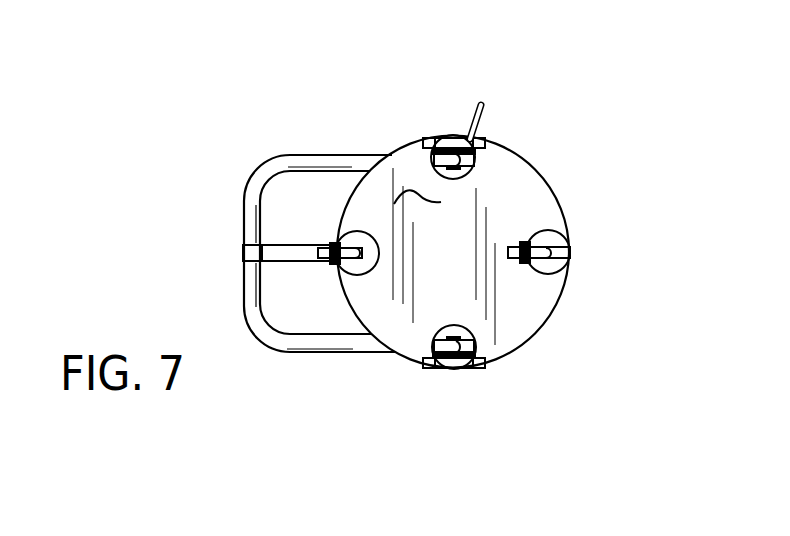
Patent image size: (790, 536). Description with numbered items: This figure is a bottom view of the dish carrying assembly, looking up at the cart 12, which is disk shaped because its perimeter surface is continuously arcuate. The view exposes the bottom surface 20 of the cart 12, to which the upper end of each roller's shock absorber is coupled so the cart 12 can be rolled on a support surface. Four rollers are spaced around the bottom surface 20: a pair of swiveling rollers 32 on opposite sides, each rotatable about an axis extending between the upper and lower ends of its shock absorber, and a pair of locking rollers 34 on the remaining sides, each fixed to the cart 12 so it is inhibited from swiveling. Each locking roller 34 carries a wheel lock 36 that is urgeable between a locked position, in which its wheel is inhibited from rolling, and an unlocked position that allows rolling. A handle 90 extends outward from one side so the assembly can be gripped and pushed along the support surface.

The cart 12 is at (525, 156).
The bottom surface 20 is at (415, 192).
The swiveling rollers 32 is at (568, 196).
The locking rollers 34 is at (453, 100).
The wheel lock 36 is at (427, 367).
The handle 90 is at (262, 168).